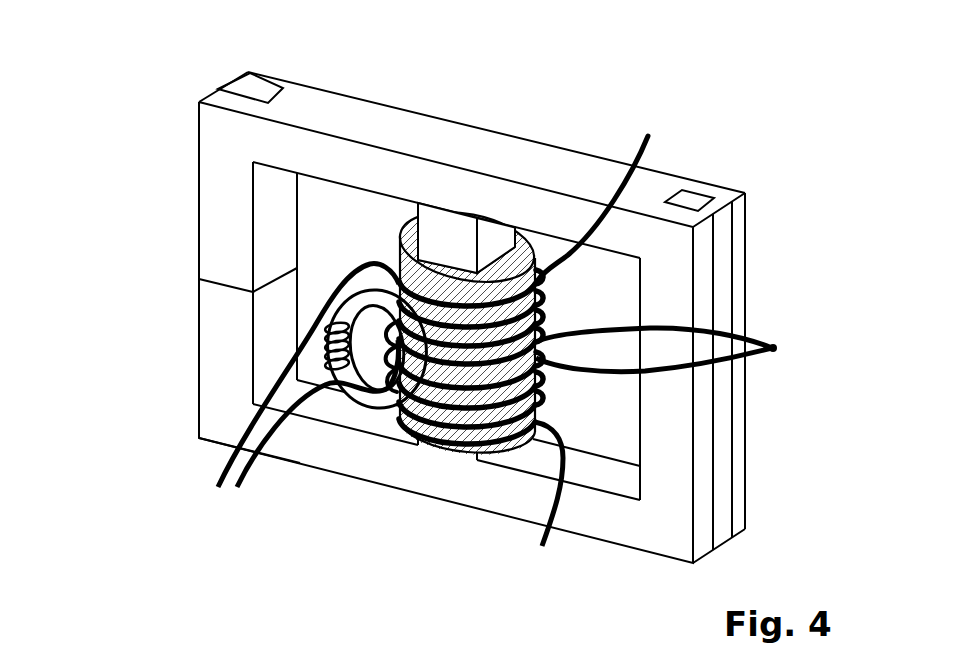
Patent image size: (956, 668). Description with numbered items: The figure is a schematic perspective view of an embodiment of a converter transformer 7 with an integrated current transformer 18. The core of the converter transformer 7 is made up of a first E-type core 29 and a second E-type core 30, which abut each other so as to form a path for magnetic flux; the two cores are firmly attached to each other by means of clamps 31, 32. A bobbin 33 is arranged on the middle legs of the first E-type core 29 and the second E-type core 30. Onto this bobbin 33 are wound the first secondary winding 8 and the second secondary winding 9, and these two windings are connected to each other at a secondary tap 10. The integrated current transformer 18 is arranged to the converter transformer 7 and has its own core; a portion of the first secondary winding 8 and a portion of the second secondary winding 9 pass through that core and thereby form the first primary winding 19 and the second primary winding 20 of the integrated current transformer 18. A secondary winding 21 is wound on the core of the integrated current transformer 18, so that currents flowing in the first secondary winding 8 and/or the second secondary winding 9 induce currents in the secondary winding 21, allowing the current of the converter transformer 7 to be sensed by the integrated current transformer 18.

The converter transformer 7 is at (166, 140).
The first secondary winding 8 is at (540, 435).
The second secondary winding 9 is at (553, 258).
The secondary tap 10 is at (775, 348).
The integrated current transformer 18 is at (336, 425).
The first primary winding 19 is at (397, 385).
The second primary winding 20 is at (392, 346).
The secondary winding 21 is at (213, 513).
The first E-type core 29 is at (212, 218).
The second E-type core 30 is at (212, 384).
The clamp 31 is at (245, 90).
The clamp 32 is at (698, 202).
The bobbin 33 is at (491, 277).